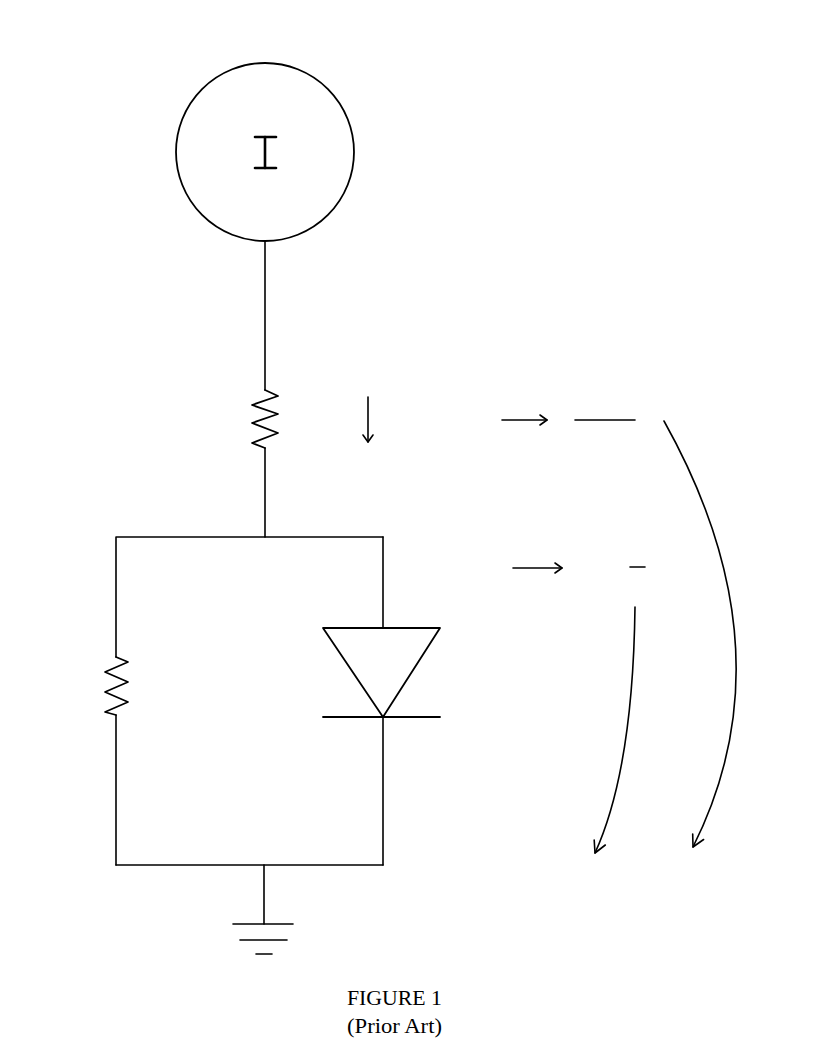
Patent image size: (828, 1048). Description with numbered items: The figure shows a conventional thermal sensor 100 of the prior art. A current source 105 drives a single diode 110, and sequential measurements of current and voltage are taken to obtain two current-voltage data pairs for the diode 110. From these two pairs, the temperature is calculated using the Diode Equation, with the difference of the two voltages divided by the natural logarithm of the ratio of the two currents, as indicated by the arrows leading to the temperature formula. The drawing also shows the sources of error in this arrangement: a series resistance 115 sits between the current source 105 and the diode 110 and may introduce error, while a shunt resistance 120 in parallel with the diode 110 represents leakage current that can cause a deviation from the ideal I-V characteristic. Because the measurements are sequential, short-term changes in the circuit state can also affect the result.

The conventional thermal sensor 100 is at (123, 26).
The current source 105 is at (281, 221).
The diode 110 is at (398, 667).
The series resistance 115 is at (242, 412).
The shunt resistance 120 is at (87, 685).